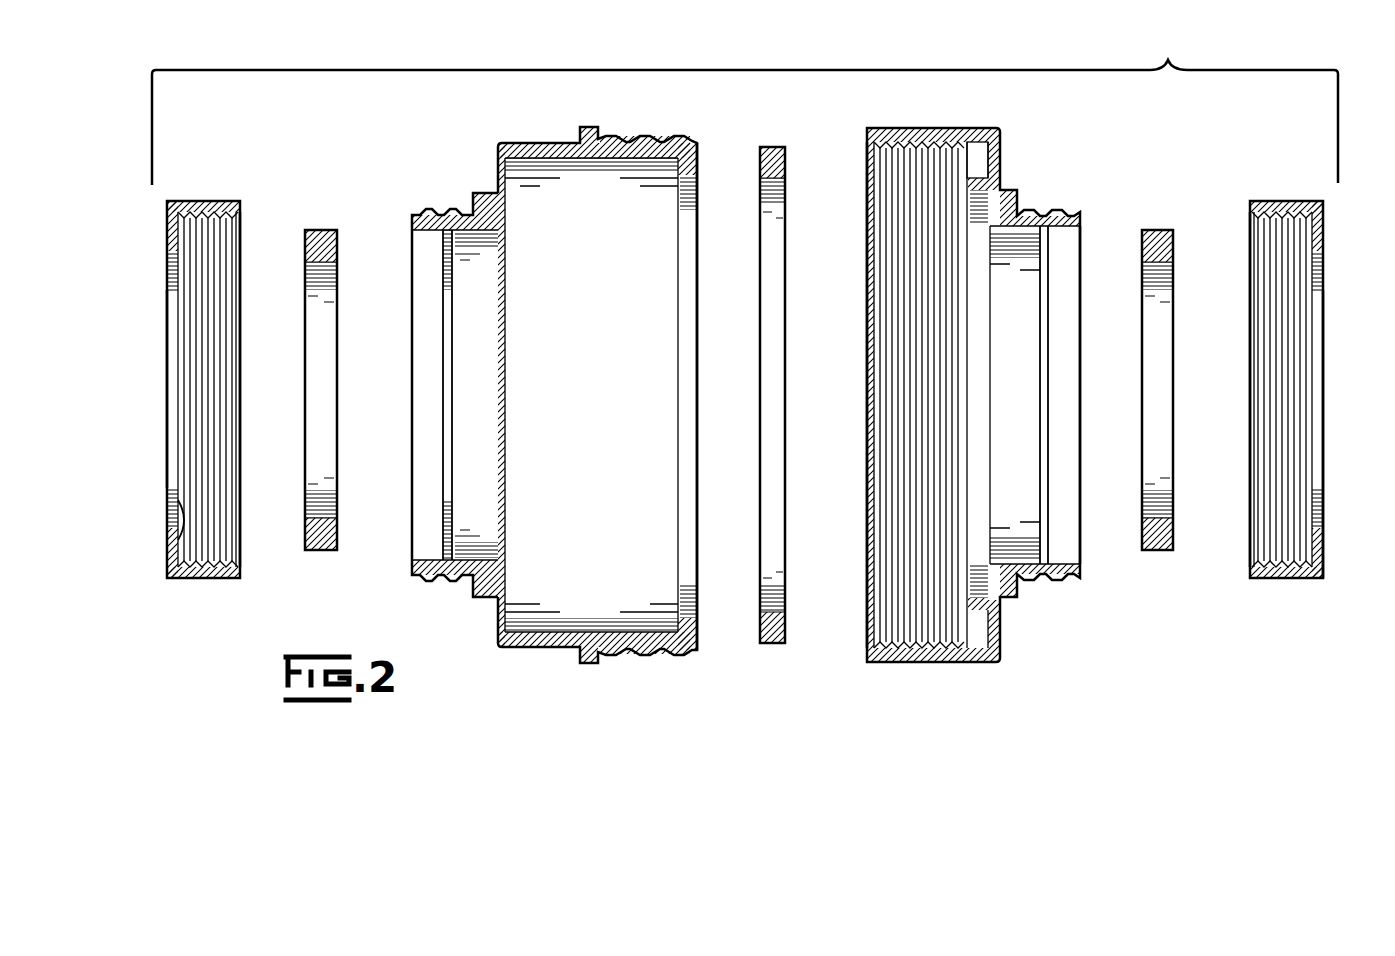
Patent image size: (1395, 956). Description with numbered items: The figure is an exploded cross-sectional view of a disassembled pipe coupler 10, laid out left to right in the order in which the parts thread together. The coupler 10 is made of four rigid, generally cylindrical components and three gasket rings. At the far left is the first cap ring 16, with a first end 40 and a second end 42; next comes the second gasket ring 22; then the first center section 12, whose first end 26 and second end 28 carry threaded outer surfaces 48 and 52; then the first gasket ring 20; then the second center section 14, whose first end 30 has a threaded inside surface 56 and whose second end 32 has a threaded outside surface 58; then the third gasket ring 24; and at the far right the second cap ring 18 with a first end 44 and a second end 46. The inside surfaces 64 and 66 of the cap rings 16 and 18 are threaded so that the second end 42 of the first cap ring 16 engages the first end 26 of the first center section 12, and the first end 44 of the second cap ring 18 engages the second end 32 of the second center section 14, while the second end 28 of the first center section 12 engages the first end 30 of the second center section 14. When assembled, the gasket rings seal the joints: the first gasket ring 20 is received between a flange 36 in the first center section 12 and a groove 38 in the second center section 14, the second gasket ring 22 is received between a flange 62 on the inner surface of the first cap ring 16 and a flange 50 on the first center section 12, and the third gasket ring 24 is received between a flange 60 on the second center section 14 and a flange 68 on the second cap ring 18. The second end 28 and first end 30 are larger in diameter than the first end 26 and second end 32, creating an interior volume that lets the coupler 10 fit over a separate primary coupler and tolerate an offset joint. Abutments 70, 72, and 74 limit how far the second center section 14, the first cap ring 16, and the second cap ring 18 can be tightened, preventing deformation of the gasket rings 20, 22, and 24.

The coupler 10 is at (1168, 60).
The first center section 12 is at (491, 159).
The second center section 14 is at (931, 125).
The first cap ring 16 is at (168, 286).
The second cap ring 18 is at (1326, 286).
The first gasket ring 20 is at (790, 201).
The second gasket ring 22 is at (309, 243).
The third gasket ring 24 is at (1173, 246).
The first end 26 is at (414, 338).
The second end 28 is at (698, 488).
The first end 30 is at (868, 338).
The second end 32 is at (1082, 348).
The flange 36 is at (692, 604).
The groove 38 is at (979, 157).
The first end 40 is at (168, 411).
The second end 42 is at (242, 340).
The first end 44 is at (1250, 386).
The second end 46 is at (1326, 346).
The outer surface 48 is at (445, 581).
The flange 50 is at (444, 458).
The outer surface 52 is at (648, 661).
The inside surface 56 is at (906, 490).
The outside surface 58 is at (1061, 592).
The flange 60 is at (1050, 489).
The flange 62 is at (184, 535).
The inside surface 64 is at (212, 492).
The inside surface 66 is at (1285, 490).
The flange 68 is at (1330, 470).
The abutment 70 is at (581, 130).
The abutment 72 is at (477, 199).
The abutment 74 is at (1012, 193).